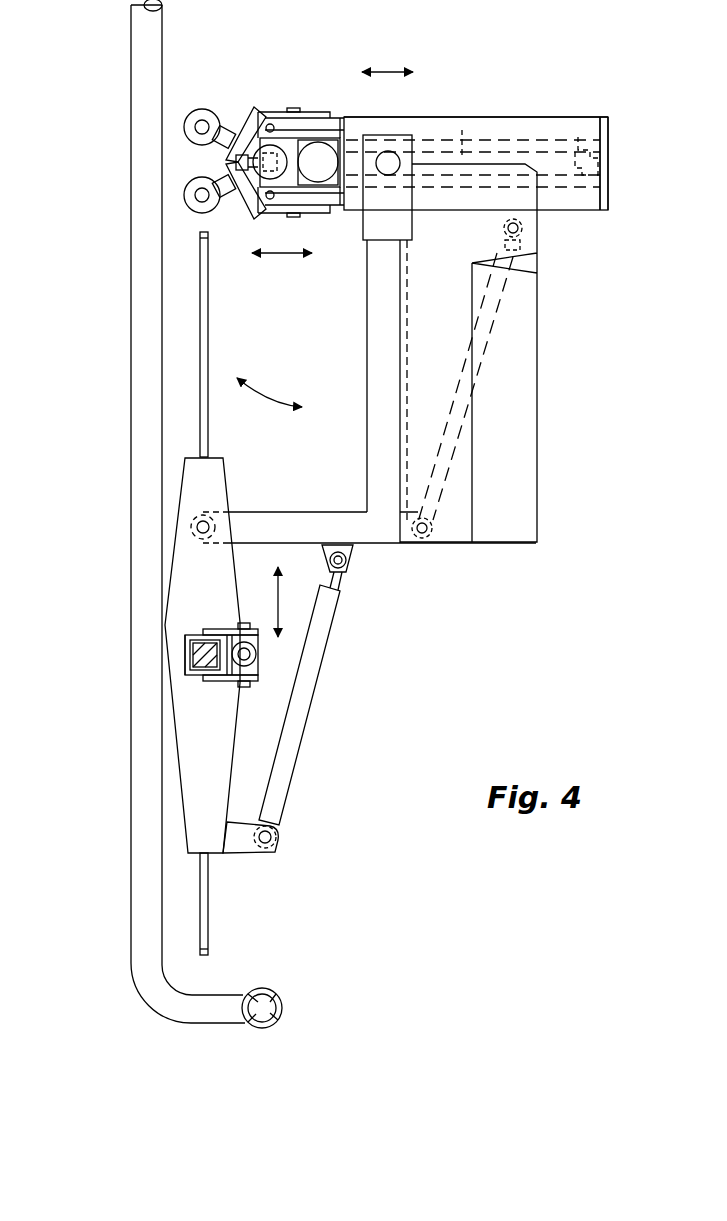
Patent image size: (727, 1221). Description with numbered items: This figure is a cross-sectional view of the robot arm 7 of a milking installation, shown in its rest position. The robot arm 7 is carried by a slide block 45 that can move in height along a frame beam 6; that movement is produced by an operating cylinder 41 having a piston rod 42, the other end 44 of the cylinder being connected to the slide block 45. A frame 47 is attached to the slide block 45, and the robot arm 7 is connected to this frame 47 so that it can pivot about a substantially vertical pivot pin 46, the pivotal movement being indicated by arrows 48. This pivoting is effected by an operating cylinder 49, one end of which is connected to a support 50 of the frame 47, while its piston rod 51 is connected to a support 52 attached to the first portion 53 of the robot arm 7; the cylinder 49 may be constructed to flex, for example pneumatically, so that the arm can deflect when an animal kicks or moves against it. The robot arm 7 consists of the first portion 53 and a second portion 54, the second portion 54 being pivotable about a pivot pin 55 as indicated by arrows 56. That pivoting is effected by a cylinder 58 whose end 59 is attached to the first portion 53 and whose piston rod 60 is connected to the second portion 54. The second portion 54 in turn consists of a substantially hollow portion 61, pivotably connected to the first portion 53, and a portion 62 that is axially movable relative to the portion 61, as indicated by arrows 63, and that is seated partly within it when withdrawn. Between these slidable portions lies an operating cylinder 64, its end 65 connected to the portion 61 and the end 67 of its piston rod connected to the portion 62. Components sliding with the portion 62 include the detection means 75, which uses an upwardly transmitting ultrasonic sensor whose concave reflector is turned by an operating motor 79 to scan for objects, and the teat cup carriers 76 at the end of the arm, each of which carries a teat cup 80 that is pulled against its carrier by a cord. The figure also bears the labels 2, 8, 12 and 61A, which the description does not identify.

The pole 2 is at (137, 103).
The frame beam 6 is at (202, 663).
The robot arm 7 is at (497, 548).
The vertical movement arrow 8 is at (283, 600).
The rod 12 is at (207, 425).
The operating cylinder 41 is at (249, 652).
The piston rod 42 is at (237, 668).
The other end of operating cylinder 44 is at (257, 676).
The slide block 45 is at (199, 630).
The pivot pin 46 is at (203, 520).
The frame 47 is at (212, 794).
The arrows 48 is at (278, 388).
The operating cylinder 49 is at (300, 731).
The support 50 is at (250, 845).
The piston rod 51 is at (345, 585).
The support 52 is at (335, 548).
The first portion 53 is at (425, 422).
The second portion 54 is at (488, 123).
The pivot pin 55 is at (390, 152).
The arrows 56 is at (393, 66).
The cylinder 58 is at (487, 343).
The end of cylinder 59 is at (427, 540).
The piston rod 60 is at (503, 250).
The portion 61 is at (513, 112).
The beam end 61A is at (610, 200).
The portion 62 is at (275, 105).
The arrows 63 is at (302, 258).
The operating cylinder 64 is at (465, 128).
The end of operating cylinder 65 is at (583, 137).
The end of piston rod 67 is at (230, 163).
The detection means 75 is at (263, 208).
The teat cup carriers 76 is at (240, 108).
The operating motor 79 is at (323, 150).
The teat cup 80 is at (202, 110).